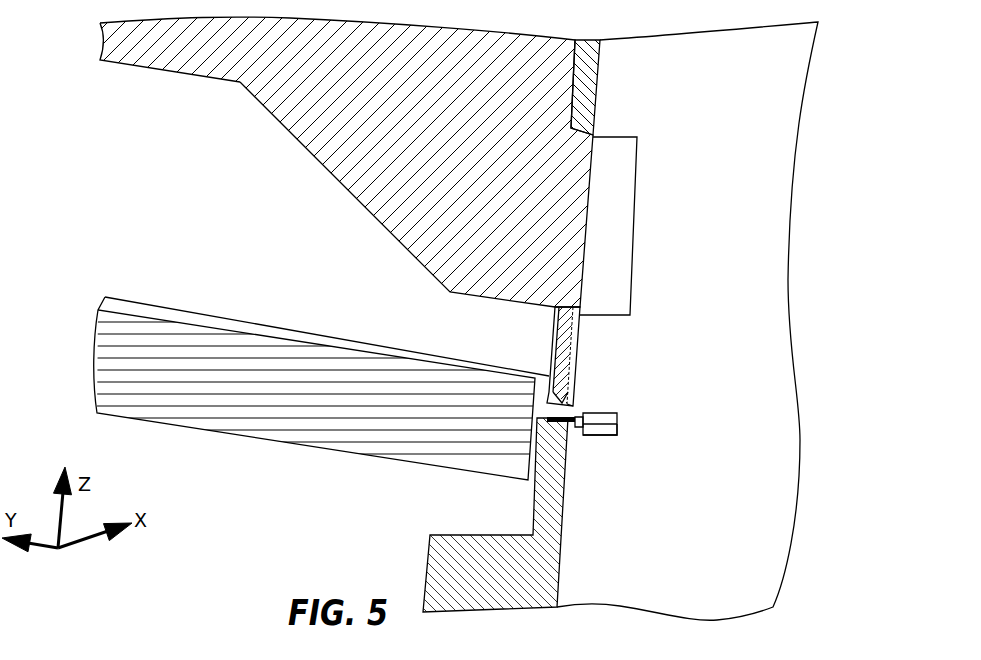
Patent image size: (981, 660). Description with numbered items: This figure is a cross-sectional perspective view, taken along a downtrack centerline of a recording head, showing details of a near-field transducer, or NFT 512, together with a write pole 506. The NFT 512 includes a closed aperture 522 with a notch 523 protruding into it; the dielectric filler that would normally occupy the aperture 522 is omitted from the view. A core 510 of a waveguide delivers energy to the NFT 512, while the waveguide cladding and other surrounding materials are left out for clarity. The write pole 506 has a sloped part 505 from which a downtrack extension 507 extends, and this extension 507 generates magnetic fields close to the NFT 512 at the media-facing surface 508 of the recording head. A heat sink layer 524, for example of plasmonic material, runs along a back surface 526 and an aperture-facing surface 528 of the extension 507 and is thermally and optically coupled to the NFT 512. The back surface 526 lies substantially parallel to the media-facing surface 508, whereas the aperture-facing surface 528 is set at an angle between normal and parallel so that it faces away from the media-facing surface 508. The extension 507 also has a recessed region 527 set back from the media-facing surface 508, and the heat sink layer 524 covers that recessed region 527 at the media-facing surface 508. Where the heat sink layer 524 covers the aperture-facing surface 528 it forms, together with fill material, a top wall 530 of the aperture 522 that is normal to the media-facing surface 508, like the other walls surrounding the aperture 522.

The sloped part 505 is at (412, 252).
The write pole 506 is at (172, 69).
The downtrack extension 507 is at (582, 315).
The media-facing surface 508 is at (760, 317).
The core 510 is at (380, 452).
The near-field transducer 512 is at (634, 470).
The closed aperture 522 is at (618, 440).
The notch 523 is at (573, 428).
The heat sink layer 524 is at (565, 328).
The back surface 526 is at (548, 360).
The recessed region 527 is at (575, 368).
The aperture-facing surface 528 is at (573, 394).
The top wall 530 is at (617, 413).